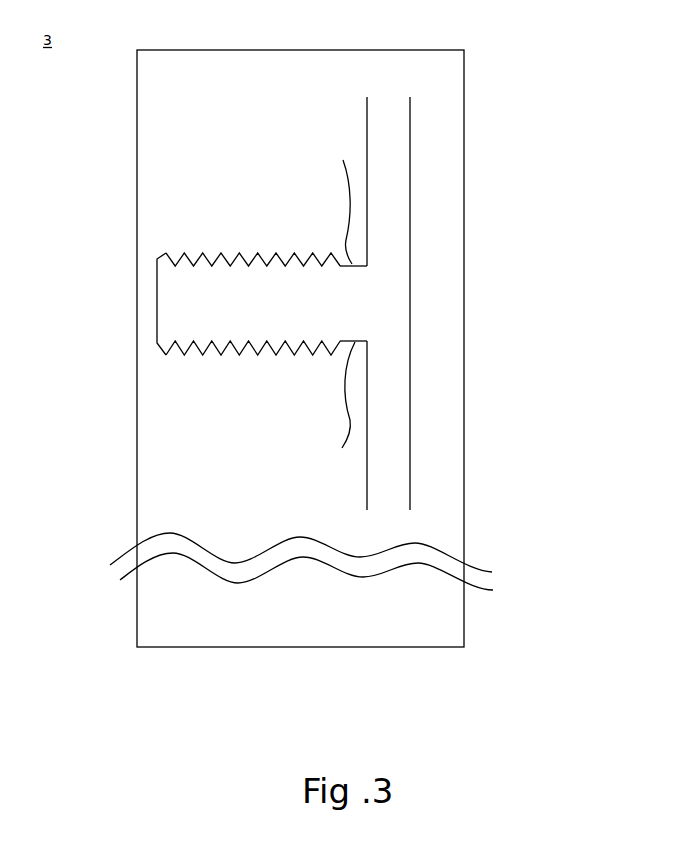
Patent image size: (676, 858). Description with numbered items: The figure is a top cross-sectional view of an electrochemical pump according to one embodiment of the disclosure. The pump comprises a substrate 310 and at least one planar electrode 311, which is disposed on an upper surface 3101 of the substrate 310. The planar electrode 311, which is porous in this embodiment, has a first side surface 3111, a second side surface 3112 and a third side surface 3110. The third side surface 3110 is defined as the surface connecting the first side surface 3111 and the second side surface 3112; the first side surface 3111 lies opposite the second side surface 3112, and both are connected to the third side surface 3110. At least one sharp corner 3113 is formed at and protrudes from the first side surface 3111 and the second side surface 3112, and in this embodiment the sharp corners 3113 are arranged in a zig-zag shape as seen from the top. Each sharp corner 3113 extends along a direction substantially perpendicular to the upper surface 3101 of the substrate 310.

The substrate 310 is at (464, 164).
The upper surface 3101 is at (437, 94).
The planar electrode 311 is at (352, 315).
The third side surface 3110 is at (180, 306).
The first side surface 3111 is at (323, 198).
The second side surface 3112 is at (322, 411).
The sharp corner 3113 is at (331, 240).